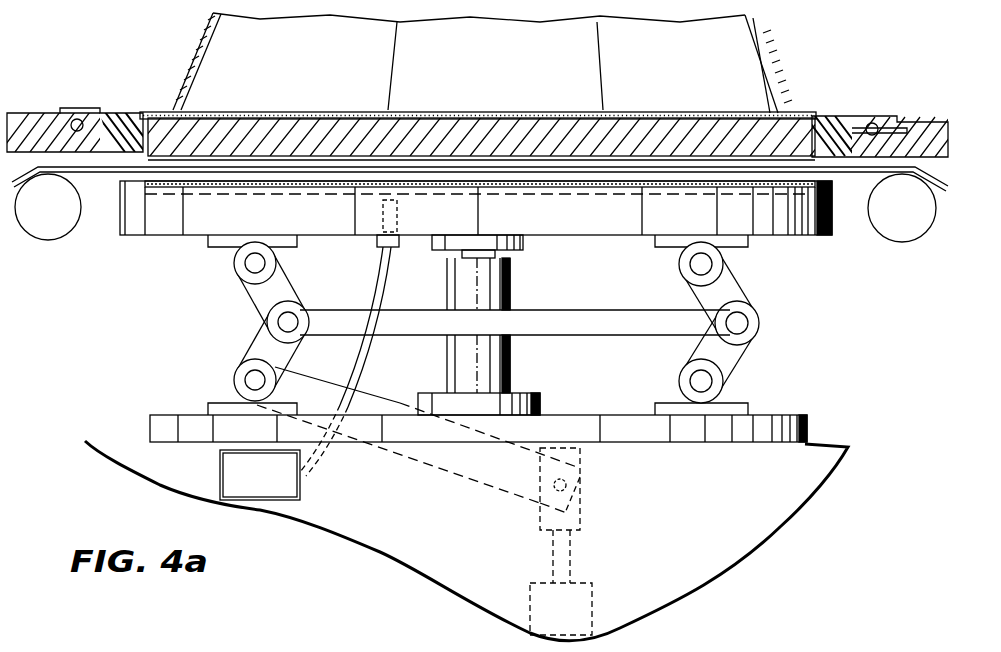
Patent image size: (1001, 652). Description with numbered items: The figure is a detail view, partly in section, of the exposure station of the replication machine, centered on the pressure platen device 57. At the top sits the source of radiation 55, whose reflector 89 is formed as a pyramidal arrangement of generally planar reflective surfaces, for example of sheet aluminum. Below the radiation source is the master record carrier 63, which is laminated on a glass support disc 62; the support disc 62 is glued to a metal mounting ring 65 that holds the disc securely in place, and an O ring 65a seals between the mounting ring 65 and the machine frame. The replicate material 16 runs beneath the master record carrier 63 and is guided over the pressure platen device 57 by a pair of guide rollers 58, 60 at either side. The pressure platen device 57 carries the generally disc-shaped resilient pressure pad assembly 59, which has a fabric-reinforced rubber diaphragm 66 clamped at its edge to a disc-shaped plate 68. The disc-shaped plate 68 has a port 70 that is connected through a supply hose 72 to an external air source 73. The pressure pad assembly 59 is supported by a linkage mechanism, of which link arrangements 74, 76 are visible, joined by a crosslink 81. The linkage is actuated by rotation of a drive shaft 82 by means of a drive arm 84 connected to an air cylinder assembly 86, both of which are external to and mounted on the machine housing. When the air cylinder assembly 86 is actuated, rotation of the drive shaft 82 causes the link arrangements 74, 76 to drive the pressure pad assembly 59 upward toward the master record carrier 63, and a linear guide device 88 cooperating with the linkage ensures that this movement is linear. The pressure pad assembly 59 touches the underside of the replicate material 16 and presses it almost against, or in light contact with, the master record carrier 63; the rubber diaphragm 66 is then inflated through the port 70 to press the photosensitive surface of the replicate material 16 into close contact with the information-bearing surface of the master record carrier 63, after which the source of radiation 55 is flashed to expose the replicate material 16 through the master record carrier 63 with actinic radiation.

The replicate material 16 is at (855, 174).
The source of radiation 55 is at (782, 70).
The pressure platen device 57 is at (185, 300).
The guide roller 58 is at (60, 240).
The pressure pad assembly 59 is at (612, 220).
The guide roller 60 is at (903, 242).
The glass support disc 62 is at (516, 130).
The master record carrier 63 is at (699, 128).
The metal mounting ring 65 is at (860, 124).
The O ring 65a is at (80, 112).
The fabric-reinforced rubber diaphragm 66 is at (268, 189).
The disc-shaped plate 68 is at (348, 238).
The port 70 is at (400, 207).
The supply hose 72 is at (392, 274).
The air source 73 is at (220, 468).
The link arrangement 74 is at (258, 300).
The link arrangement 76 is at (740, 291).
The crosslink 81 is at (626, 330).
The drive shaft 82 is at (246, 378).
The drive arm 84 is at (487, 483).
The air cylinder assembly 86 is at (595, 598).
The linear guide device 88 is at (512, 290).
The reflector 89 is at (760, 96).